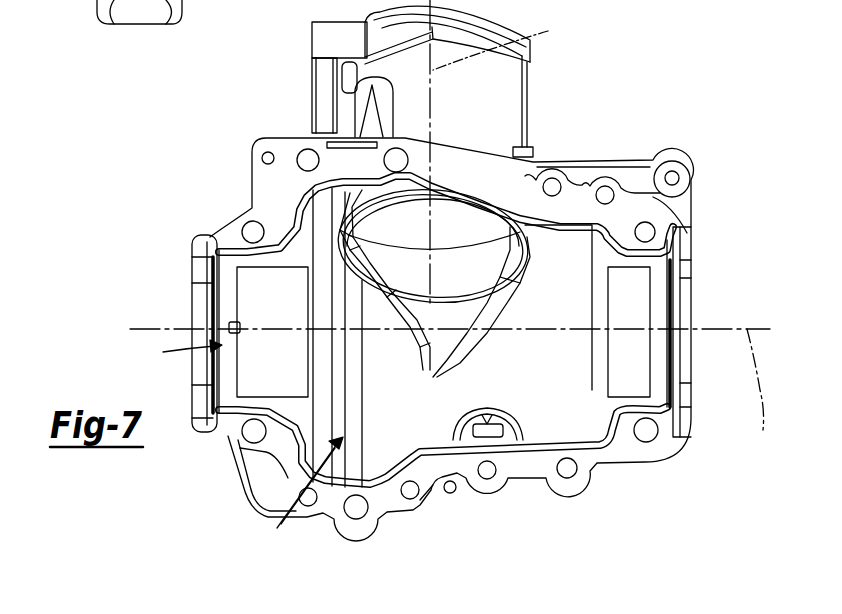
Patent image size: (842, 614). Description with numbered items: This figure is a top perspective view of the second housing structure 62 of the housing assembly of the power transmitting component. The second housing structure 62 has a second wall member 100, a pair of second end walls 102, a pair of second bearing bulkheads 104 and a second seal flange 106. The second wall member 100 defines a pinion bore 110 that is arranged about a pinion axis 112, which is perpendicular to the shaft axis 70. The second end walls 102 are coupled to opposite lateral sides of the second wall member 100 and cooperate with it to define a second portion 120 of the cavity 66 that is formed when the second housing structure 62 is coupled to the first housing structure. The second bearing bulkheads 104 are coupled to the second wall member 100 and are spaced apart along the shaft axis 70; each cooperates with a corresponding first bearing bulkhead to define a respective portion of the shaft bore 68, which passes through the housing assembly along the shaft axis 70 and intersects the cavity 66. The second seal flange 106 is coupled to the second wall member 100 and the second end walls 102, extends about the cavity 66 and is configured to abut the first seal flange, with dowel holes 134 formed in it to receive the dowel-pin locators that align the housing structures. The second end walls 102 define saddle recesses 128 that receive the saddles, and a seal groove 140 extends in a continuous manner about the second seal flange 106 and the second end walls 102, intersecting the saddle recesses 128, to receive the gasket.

The second housing structure 62 is at (637, 131).
The cavity 66 is at (308, 486).
The shaft bore 68 is at (181, 353).
The shaft axis 70 is at (759, 393).
The second wall member 100 is at (480, 77).
The second end walls 102 is at (192, 252).
The second bearing bulkheads 104 is at (260, 395).
The second seal flange 106 is at (588, 193).
The pinion bore 110 is at (467, 230).
The pinion axis 112 is at (548, 31).
The second portion of the cavity 120 is at (293, 494).
The saddle recesses 128 is at (205, 290).
The dowel holes 134 is at (377, 507).
The seal groove 140 is at (298, 202).